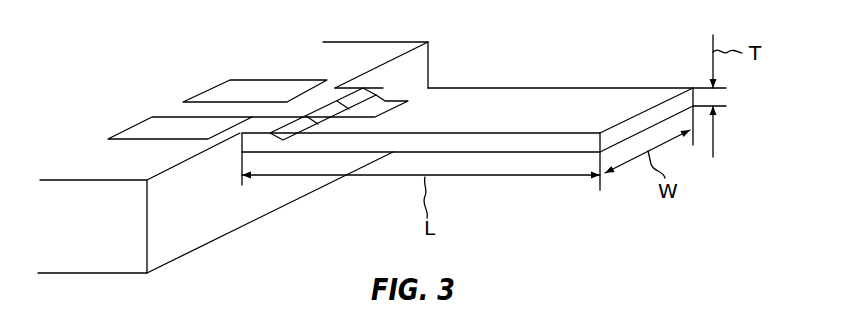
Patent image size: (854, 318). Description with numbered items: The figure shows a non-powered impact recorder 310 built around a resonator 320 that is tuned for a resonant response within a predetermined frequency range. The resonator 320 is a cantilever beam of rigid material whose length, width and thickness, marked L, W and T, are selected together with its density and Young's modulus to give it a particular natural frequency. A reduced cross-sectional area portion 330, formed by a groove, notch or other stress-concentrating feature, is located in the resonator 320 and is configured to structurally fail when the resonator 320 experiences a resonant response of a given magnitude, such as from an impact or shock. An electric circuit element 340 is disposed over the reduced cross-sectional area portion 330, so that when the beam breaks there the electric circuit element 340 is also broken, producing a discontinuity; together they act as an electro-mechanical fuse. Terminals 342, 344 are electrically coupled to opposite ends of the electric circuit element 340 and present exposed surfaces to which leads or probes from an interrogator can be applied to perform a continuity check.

The non-powered impact recorder 310 is at (461, 31).
The resonator 320 is at (570, 88).
The reduced cross-sectional area portion 330 is at (283, 143).
The electric circuit element 340 is at (393, 100).
The terminal 342 is at (130, 128).
The terminal 344 is at (207, 88).